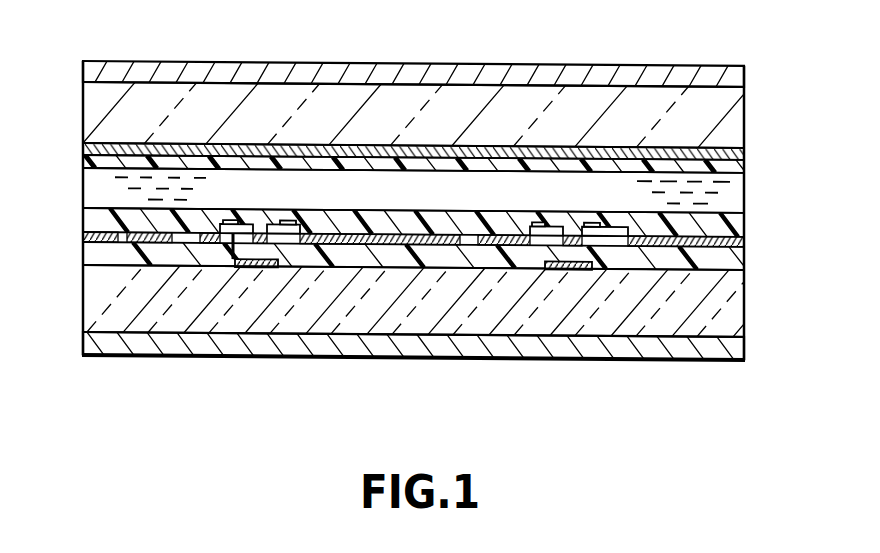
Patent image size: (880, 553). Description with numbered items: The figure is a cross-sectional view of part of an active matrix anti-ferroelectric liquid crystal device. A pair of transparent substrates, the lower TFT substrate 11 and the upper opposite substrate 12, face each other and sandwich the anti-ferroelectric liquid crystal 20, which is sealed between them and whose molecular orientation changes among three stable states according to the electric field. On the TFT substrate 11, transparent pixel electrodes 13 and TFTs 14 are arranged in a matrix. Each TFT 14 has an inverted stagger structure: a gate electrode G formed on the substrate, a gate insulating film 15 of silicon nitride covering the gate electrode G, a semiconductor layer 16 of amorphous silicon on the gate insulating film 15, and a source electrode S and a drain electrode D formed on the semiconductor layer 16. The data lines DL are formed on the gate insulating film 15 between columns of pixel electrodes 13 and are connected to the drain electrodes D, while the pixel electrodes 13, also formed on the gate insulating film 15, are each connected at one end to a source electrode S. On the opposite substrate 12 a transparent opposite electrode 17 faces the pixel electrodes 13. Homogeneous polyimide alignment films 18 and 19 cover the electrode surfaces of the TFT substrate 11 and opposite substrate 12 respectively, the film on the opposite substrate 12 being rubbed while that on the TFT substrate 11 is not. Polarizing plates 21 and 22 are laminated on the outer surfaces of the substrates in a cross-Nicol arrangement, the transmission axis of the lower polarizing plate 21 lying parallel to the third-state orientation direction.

The TFT substrate 11 is at (730, 327).
The opposite substrate 12 is at (732, 138).
The pixel electrode 13 is at (83, 273).
The TFT 14 is at (222, 258).
The gate insulating film 15 is at (313, 255).
The semiconductor layer 16 is at (263, 232).
The opposite electrode 17 is at (622, 150).
The alignment film 18 is at (403, 230).
The alignment film 19 is at (417, 163).
The anti-ferroelectric liquid crystal 20 is at (160, 177).
The polarizing plate 21 is at (733, 353).
The polarizing plate 22 is at (733, 82).
The drain electrode D is at (243, 222).
The source electrode S is at (285, 222).
The gate electrode G is at (247, 267).
The data line DL is at (138, 267).